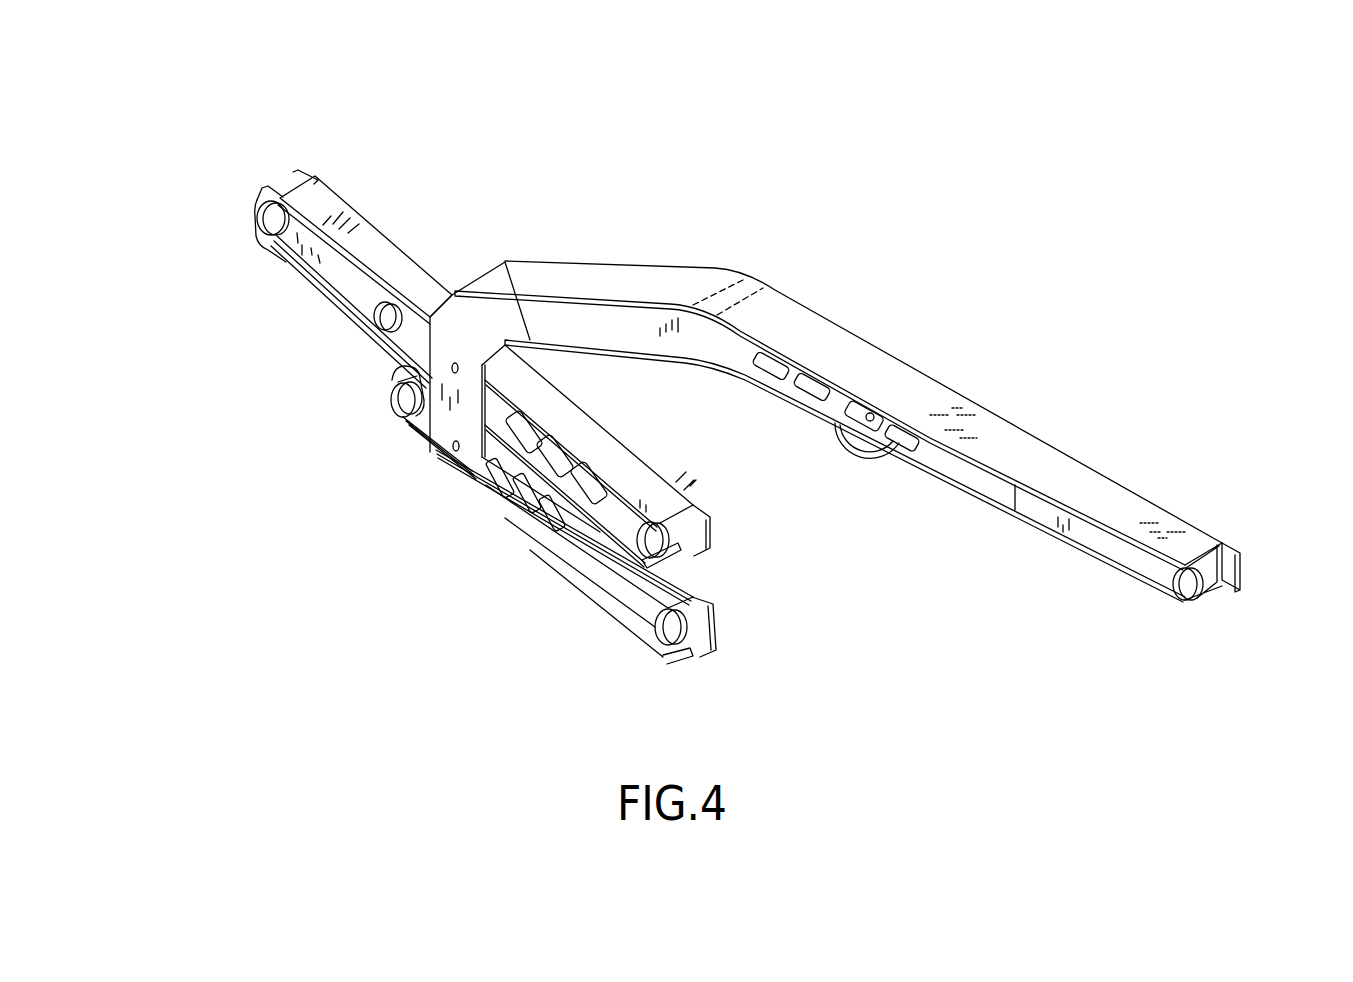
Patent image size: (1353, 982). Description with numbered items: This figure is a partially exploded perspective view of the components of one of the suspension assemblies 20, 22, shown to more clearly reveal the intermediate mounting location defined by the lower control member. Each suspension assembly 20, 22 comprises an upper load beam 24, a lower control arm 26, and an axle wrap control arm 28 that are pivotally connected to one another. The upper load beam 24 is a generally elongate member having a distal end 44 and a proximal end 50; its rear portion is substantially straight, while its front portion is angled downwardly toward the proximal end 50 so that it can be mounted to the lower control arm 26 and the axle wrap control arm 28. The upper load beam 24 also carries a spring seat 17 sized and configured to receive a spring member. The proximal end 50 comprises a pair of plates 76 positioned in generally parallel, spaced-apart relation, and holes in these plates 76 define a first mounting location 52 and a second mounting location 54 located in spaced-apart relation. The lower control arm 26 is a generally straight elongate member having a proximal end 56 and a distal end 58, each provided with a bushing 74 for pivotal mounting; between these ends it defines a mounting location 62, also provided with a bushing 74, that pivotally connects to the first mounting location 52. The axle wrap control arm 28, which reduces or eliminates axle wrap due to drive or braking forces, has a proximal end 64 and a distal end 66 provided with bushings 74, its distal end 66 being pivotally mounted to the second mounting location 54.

The suspension assembly 20 is at (702, 382).
The suspension assembly 22 is at (204, 118).
The upper load beam 24 is at (858, 338).
The lower control arm 26 is at (338, 198).
The axle wrap control arm 28 is at (558, 555).
The distal end 44 is at (1110, 478).
The proximal end 50 is at (478, 415).
The first mounting location 52 is at (455, 363).
The second mounting location 54 is at (453, 447).
The proximal end 56 is at (684, 494).
The distal end 58 is at (272, 248).
The mounting location 62 is at (372, 318).
The proximal end 64 is at (622, 608).
The distal end 66 is at (407, 422).
The bushing 74 is at (258, 215).
The plates 76 is at (388, 362).
The spring seat 17 is at (880, 466).